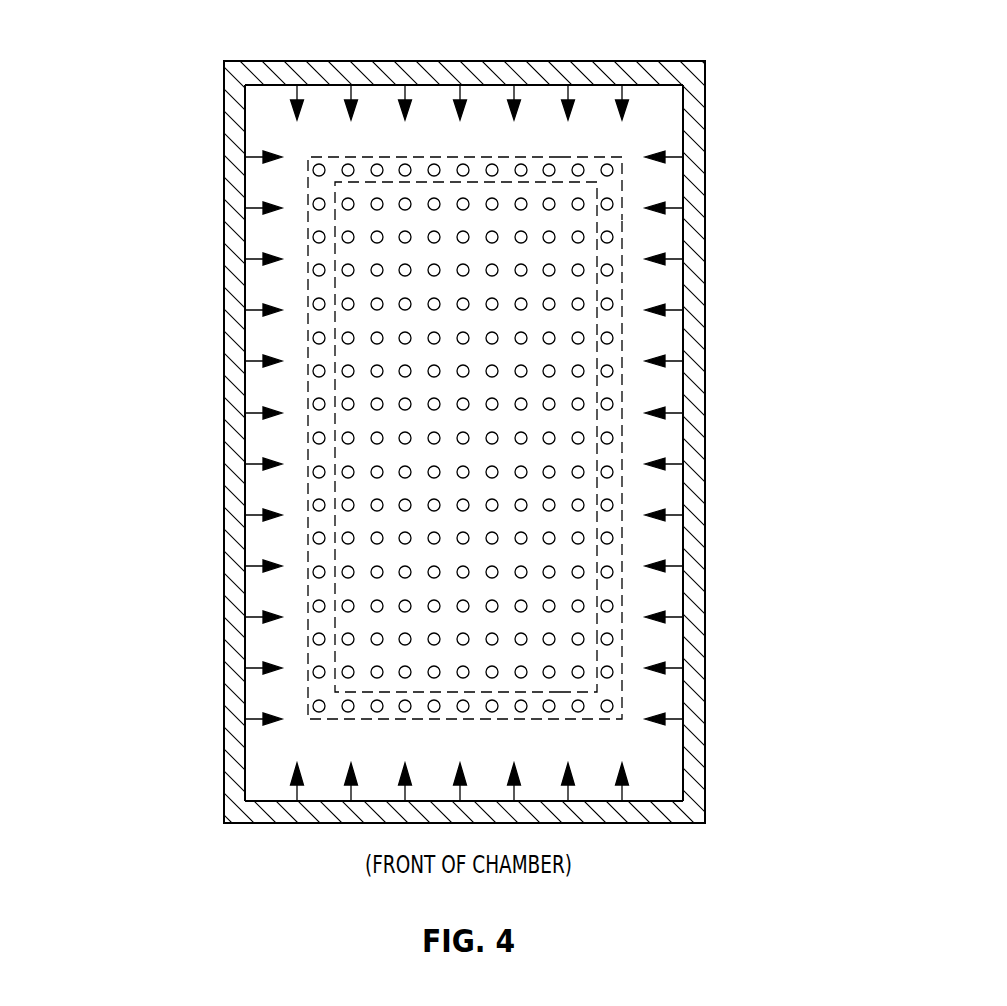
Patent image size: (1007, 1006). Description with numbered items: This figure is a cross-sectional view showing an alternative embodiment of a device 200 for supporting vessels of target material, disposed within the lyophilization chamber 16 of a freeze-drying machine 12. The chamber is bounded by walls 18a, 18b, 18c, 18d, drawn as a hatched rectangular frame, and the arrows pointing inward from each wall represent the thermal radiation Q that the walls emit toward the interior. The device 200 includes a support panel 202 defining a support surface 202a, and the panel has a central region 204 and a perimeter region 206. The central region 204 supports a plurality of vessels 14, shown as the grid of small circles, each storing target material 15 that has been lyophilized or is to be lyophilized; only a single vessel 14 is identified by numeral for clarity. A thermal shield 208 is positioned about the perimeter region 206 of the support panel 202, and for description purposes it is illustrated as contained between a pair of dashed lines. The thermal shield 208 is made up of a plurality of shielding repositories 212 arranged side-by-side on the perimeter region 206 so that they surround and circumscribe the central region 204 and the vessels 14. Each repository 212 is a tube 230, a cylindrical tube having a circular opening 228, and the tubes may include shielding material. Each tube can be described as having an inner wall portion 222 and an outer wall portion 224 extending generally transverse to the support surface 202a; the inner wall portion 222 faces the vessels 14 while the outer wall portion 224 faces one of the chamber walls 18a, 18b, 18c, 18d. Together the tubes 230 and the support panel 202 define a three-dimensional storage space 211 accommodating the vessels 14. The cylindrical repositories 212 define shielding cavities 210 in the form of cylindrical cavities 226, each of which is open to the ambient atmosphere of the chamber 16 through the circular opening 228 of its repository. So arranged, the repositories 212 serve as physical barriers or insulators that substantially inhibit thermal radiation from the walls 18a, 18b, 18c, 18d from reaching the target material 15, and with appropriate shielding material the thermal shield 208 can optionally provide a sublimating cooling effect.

The freeze-drying machine 12 is at (692, 60).
The vessel 14 is at (372, 477).
The target material 15 is at (373, 509).
The lyophilization chamber 16 is at (588, 120).
The wall of lyophilization chamber 18a is at (542, 800).
The wall of lyophilization chamber 18b is at (680, 733).
The wall of lyophilization chamber 18c is at (431, 86).
The wall of lyophilization chamber 18d is at (244, 131).
The device 200 is at (482, 140).
The support panel 202 is at (628, 235).
The support surface 202a is at (595, 148).
The central region 204 is at (566, 380).
The perimeter region 206 is at (614, 286).
The thermal shield 208 is at (308, 227).
The shielding cavity 210 is at (313, 337).
The three-dimensional storage space 211 is at (373, 590).
The shielding repository 212 is at (311, 377).
The inner wall portion 222 is at (603, 650).
The outer wall portion 224 is at (613, 640).
The cylindrical cavity 226 is at (225, 340).
The circular opening 228 is at (313, 438).
The tube 230 is at (580, 601).